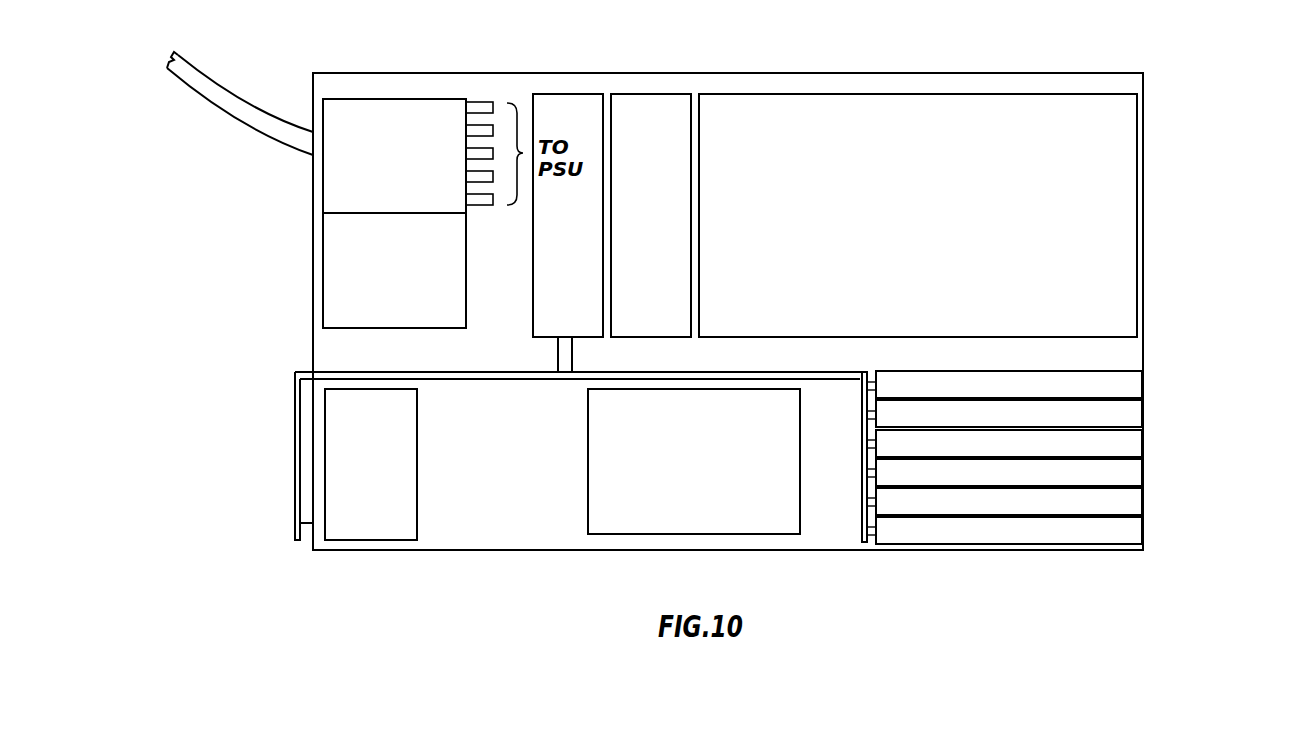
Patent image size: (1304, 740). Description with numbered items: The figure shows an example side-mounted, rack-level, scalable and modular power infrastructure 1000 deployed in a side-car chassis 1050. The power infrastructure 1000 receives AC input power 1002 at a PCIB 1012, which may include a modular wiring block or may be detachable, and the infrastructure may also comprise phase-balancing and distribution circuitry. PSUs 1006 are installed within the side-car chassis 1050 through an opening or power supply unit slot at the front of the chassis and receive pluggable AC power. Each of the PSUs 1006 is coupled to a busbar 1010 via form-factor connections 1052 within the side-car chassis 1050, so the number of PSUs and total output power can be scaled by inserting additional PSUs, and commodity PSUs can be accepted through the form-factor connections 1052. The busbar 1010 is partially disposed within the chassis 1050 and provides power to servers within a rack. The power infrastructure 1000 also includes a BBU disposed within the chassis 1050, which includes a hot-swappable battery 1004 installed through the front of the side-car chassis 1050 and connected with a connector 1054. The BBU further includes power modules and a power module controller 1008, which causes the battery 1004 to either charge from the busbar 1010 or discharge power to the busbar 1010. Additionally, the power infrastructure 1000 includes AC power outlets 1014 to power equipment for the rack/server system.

The power infrastructure 1000 is at (359, 576).
The AC input power 1002 is at (208, 77).
The hot-swappable battery 1004 is at (924, 115).
The PSUs 1006 is at (1168, 466).
The power module controller 1008 is at (756, 522).
The busbar 1010 is at (400, 363).
The PCIB 1012 is at (395, 98).
The AC power outlets 1014 is at (323, 265).
The side-car chassis 1050 is at (557, 551).
The form-factor connections 1052 is at (877, 545).
The connector 1054 is at (651, 92).